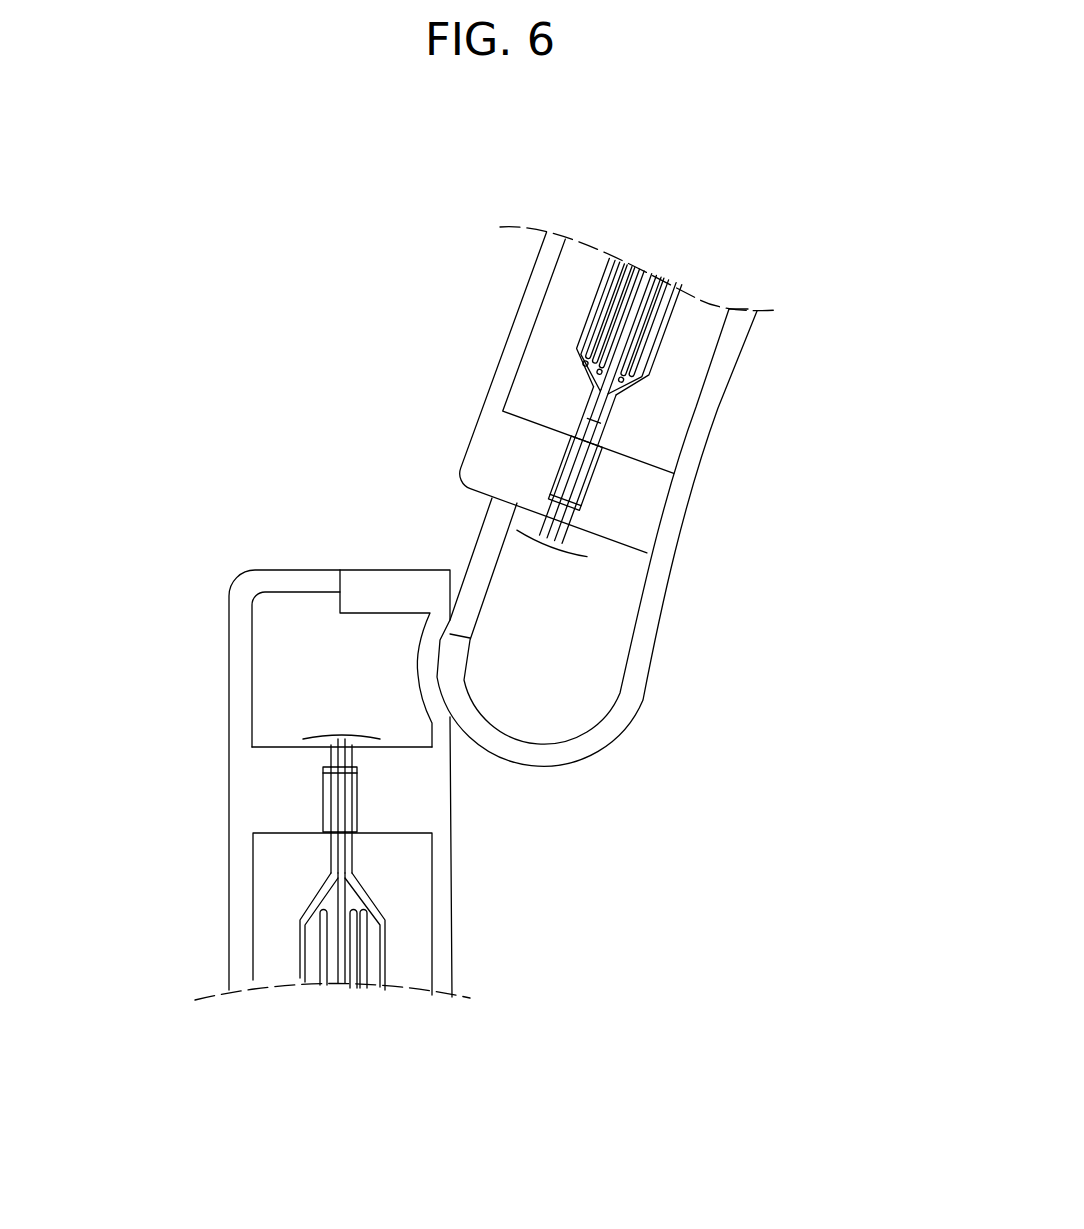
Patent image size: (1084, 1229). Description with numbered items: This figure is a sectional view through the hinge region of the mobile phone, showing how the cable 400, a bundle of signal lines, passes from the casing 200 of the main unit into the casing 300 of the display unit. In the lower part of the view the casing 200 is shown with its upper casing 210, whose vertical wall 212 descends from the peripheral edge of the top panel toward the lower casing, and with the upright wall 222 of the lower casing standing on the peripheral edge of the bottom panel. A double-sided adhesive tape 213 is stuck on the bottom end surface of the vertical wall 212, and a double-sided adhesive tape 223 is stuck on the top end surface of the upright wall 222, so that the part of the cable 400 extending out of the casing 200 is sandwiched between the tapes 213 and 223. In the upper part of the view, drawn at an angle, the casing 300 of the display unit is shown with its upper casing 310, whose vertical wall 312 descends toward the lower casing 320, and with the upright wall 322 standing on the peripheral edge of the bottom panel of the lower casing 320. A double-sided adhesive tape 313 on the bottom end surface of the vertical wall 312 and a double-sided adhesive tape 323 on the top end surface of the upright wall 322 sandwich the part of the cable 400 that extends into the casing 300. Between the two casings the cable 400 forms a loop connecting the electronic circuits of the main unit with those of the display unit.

The casing 200 is at (165, 678).
The upper casing 210 is at (447, 865).
The vertical wall 212 is at (373, 820).
The double-sided adhesive tape 213 is at (357, 800).
The upright wall 222 is at (298, 818).
The double-sided adhesive tape 223 is at (323, 797).
The casing 300 is at (763, 427).
The upper casing 310 is at (708, 443).
The vertical wall 312 is at (607, 502).
The double-sided adhesive tape 313 is at (600, 467).
The lower casing 320 is at (514, 314).
The upright wall 322 is at (533, 450).
The double-sided adhesive tape 323 is at (547, 475).
The cable 400 is at (413, 947).